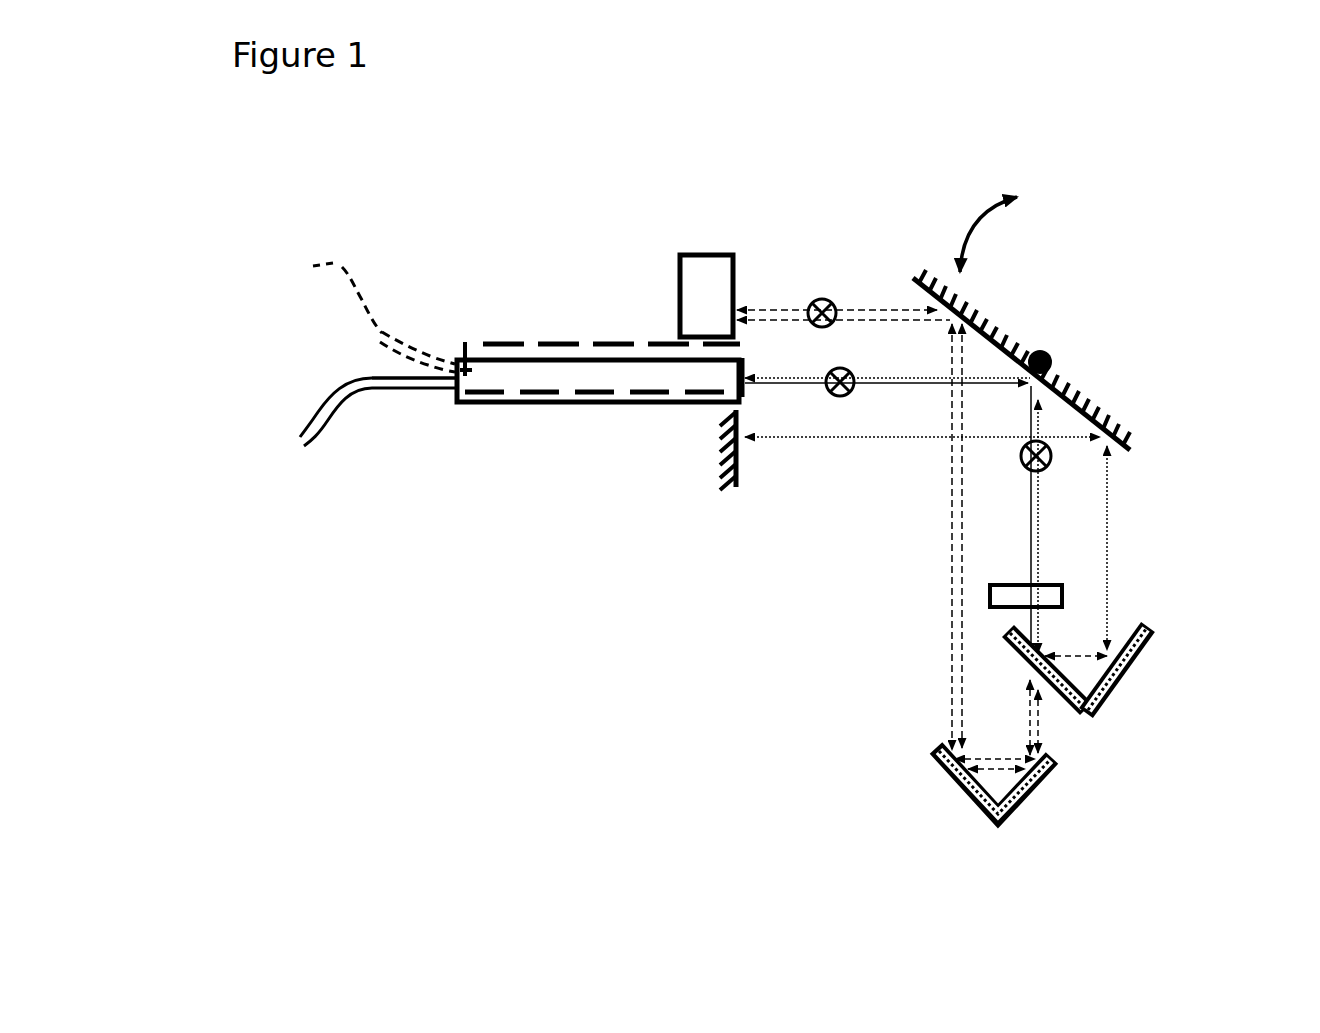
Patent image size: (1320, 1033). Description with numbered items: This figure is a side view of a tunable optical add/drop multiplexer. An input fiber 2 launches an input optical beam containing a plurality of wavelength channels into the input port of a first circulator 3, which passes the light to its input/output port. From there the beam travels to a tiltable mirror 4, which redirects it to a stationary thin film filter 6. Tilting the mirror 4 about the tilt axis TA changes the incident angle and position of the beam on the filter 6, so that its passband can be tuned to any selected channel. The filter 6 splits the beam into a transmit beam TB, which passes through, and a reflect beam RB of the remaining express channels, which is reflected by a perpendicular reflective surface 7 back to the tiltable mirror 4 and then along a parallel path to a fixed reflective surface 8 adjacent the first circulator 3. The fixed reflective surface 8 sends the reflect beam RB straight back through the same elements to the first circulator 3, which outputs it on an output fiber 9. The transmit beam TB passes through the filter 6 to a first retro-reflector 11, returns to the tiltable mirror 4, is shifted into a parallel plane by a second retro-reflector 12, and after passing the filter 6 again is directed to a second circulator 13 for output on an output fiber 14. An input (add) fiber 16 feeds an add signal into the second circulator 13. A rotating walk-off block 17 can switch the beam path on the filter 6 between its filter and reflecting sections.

The input fiber 2 is at (312, 424).
The first circulator 3 is at (530, 405).
The tiltable mirror 4 is at (1078, 393).
The thin film filter (TFF) 6 is at (1007, 640).
The perpendicular reflective surface 7 is at (1148, 640).
The fixed reflective surface 8 is at (738, 462).
The output fiber 9 is at (330, 388).
The first retro-reflector 11 is at (975, 800).
The second retro-reflector 12 is at (718, 273).
The second circulator 13 is at (573, 340).
The output fiber 14 is at (335, 268).
The input (add) fiber 16 is at (334, 264).
The walk-off block 17 is at (1050, 586).
The tilt axis TA is at (1040, 350).
The transmit beam TB is at (923, 537).
The reflect beam RB is at (1145, 548).